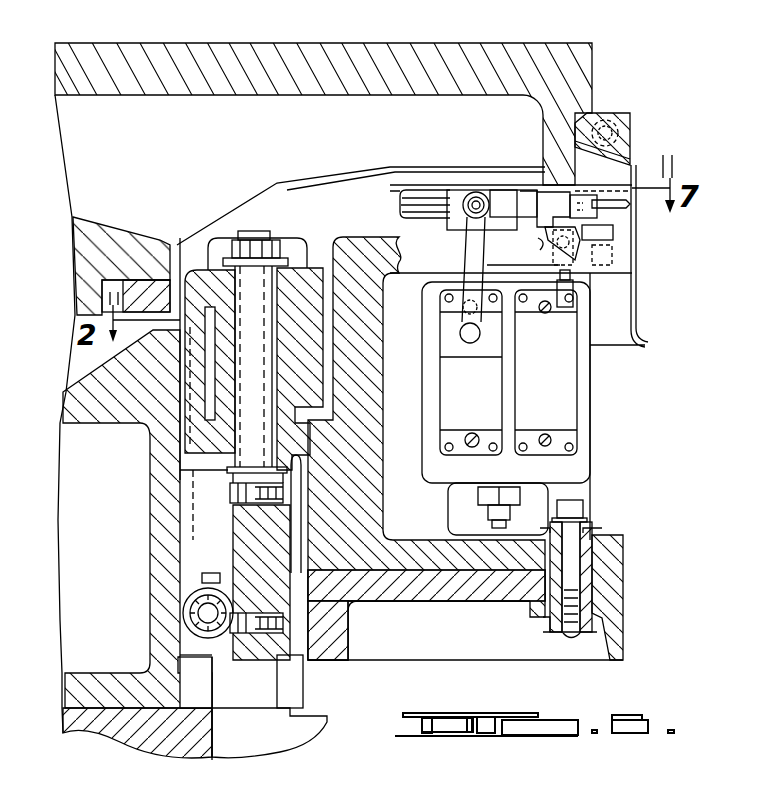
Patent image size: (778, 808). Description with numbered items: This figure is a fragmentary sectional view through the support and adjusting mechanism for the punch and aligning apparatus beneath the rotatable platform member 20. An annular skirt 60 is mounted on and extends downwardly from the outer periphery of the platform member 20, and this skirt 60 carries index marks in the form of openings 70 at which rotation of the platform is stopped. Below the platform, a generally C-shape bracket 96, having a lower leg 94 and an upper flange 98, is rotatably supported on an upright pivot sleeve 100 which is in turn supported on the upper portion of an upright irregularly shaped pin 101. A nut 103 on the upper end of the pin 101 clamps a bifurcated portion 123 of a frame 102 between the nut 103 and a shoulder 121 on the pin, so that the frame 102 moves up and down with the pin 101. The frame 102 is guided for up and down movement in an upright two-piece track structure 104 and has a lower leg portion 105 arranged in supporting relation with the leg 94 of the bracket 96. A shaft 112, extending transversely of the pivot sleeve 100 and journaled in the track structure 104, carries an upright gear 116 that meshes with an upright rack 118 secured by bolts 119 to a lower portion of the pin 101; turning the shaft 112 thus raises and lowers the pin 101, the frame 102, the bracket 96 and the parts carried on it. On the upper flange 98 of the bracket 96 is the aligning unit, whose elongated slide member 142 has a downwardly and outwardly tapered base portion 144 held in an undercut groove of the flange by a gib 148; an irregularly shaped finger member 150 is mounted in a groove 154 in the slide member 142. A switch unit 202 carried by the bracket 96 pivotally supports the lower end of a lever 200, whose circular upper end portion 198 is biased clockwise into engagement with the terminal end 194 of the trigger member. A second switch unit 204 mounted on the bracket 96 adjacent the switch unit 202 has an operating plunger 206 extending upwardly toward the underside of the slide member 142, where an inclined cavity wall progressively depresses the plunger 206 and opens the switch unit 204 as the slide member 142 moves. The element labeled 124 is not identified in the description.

The platform member 20 is at (572, 43).
The skirt 60 is at (637, 308).
The openings 70 is at (633, 218).
The lower leg 94 is at (613, 555).
The bracket 96 is at (370, 362).
The upper flange 98 is at (422, 262).
The pivot sleeve 100 is at (252, 262).
The pin 101 is at (282, 518).
The frame 102 is at (213, 287).
The nut 103 is at (283, 250).
The track structure 104 is at (297, 683).
The lower leg portion 105 is at (608, 598).
The shaft 112 is at (203, 607).
The gear 116 is at (193, 615).
The rack 118 is at (250, 523).
The bolts 119 is at (238, 490).
The shoulder 121 is at (232, 450).
The bifurcated portion 123 is at (290, 442).
The bolt 124 is at (592, 520).
The slide member 142 is at (553, 200).
The base portion 144 is at (543, 240).
The gib 148 is at (614, 232).
The finger member 150 is at (613, 173).
The groove 154 is at (593, 200).
The terminal end 194 is at (500, 193).
The upper end portion 198 is at (448, 213).
The lever 200 is at (473, 240).
The switch unit 202 is at (490, 398).
The second switch unit 204 is at (553, 387).
The operating plunger 206 is at (573, 278).